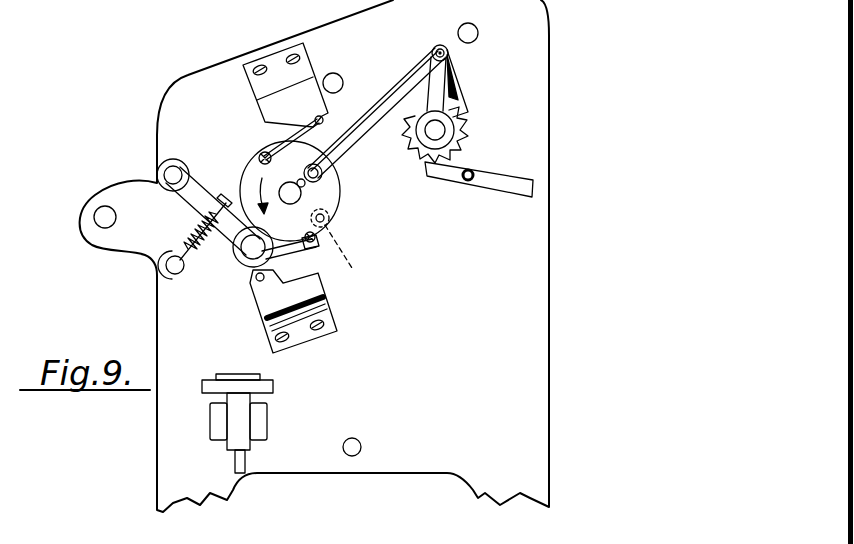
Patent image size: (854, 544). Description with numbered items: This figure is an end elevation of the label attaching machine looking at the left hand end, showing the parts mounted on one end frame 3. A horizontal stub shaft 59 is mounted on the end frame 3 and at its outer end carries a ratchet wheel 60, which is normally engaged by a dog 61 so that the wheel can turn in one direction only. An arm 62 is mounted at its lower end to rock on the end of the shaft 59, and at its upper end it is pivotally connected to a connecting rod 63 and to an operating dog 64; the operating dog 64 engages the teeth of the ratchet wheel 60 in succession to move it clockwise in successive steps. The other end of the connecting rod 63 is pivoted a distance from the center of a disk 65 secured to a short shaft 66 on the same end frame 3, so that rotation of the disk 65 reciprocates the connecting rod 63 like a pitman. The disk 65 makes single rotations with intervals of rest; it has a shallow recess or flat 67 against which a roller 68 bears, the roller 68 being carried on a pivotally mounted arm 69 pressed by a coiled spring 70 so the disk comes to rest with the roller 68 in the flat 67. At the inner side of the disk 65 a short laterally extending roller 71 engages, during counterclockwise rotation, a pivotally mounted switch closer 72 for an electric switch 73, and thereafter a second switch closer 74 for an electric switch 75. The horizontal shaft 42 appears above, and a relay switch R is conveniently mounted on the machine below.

The end frame 3 is at (549, 226).
The horizontal shaft 42 is at (478, 33).
The stub shaft 59 is at (446, 130).
The ratchet wheel 60 is at (418, 150).
The dog 61 is at (453, 178).
The arm 62 is at (440, 90).
The connecting rod 63 is at (387, 93).
The operating dog 64 is at (453, 77).
The disk 65 is at (340, 193).
The short shaft 66 is at (325, 175).
The shallow recess or flat 67 is at (304, 222).
The roller 68 is at (236, 265).
The pivotally mounted arm 69 is at (203, 183).
The coiled spring 70 is at (193, 234).
The laterally extending roller 71 is at (349, 258).
The switch closer 72 is at (290, 142).
The electric switch 73 is at (297, 90).
The second switch closer 74 is at (300, 252).
The electric switch 75 is at (325, 300).
The relay switch R is at (243, 413).